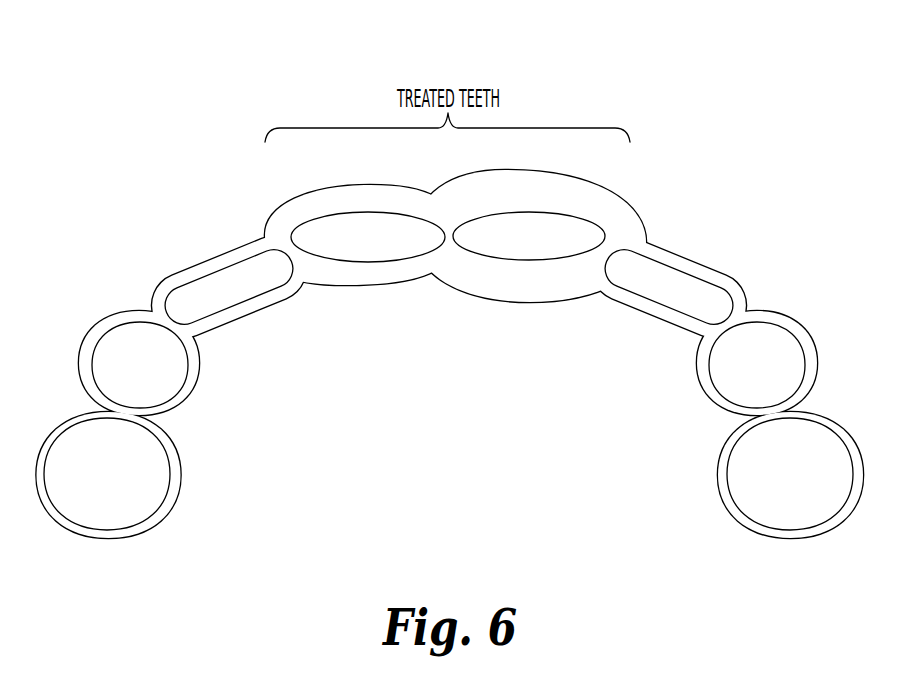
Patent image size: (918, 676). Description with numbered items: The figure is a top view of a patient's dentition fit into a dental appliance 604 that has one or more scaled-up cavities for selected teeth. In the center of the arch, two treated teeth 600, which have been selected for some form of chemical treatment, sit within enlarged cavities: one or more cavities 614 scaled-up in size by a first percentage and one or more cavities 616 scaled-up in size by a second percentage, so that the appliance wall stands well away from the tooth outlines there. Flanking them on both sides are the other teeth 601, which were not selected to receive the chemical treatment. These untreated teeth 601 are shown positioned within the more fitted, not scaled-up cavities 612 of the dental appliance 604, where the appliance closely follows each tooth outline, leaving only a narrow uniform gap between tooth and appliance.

The dental appliance 604 is at (450, 279).
The treated teeth 600 is at (384, 249).
The untreated teeth 601 is at (210, 283).
The fitted cavities 612 is at (182, 478).
The cavities scaled-up by a first percentage 614 is at (372, 286).
The cavities scaled-up by a second percentage 616 is at (532, 302).